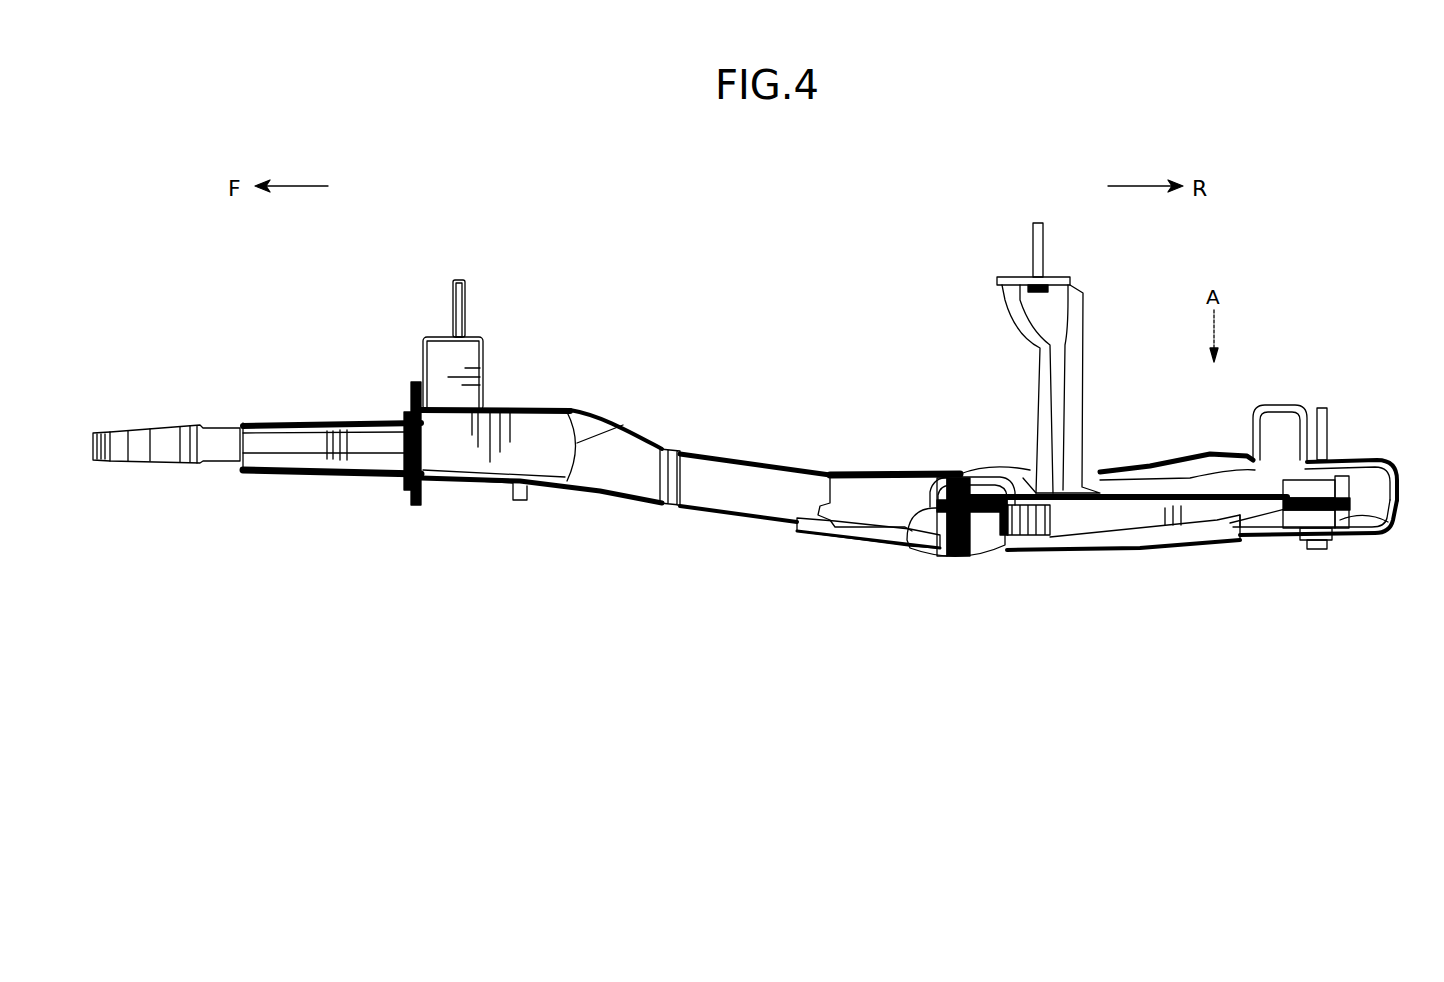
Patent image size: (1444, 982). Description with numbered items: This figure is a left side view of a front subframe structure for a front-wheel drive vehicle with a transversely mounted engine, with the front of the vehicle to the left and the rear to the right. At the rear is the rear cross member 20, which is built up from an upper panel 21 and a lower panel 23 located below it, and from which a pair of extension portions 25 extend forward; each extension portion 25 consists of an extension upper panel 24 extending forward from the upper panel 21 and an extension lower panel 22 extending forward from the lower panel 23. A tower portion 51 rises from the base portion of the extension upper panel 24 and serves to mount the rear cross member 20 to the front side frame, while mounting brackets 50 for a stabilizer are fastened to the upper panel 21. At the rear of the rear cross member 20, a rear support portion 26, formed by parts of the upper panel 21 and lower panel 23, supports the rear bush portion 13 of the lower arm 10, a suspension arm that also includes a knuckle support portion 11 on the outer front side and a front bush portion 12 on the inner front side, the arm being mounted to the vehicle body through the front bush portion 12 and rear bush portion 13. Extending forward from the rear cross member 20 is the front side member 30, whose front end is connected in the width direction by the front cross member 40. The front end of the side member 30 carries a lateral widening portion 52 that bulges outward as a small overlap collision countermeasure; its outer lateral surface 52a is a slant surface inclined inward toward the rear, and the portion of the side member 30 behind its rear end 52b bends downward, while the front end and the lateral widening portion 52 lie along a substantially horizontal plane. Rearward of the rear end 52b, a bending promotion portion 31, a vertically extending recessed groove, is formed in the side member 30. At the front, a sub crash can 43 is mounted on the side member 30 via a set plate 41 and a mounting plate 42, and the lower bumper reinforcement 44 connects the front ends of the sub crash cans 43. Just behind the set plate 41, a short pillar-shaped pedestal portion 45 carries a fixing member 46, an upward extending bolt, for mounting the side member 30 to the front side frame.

The lower arm 10 is at (1142, 542).
The knuckle support portion 11 is at (962, 477).
The front bush portion 12 is at (981, 477).
The rear bush portion 13 is at (1385, 523).
The rear cross member 20 is at (1158, 462).
The upper panel 21 is at (1363, 457).
The extension lower panel 22 is at (864, 548).
The lower panel 23 is at (1352, 534).
The extension upper panel 24 is at (873, 472).
The extension portion 25 is at (850, 468).
The rear support portion 26 is at (1288, 537).
The front side member 30 is at (760, 461).
The bending promotion portion 31 is at (680, 480).
The front cross member 40 is at (533, 490).
The set plate 41 is at (411, 385).
The mounting plate 42 is at (405, 412).
The sub crash can 43 is at (328, 460).
The lower bumper reinforcement 44 is at (152, 428).
The pedestal portion 45 is at (484, 354).
The fixing member 46 is at (466, 304).
The mounting bracket 50 is at (1272, 405).
The tower portion 51 is at (1088, 328).
The lateral widening portion 52 is at (535, 409).
The outer lateral surface 52a is at (457, 462).
The rear end 52b is at (587, 443).